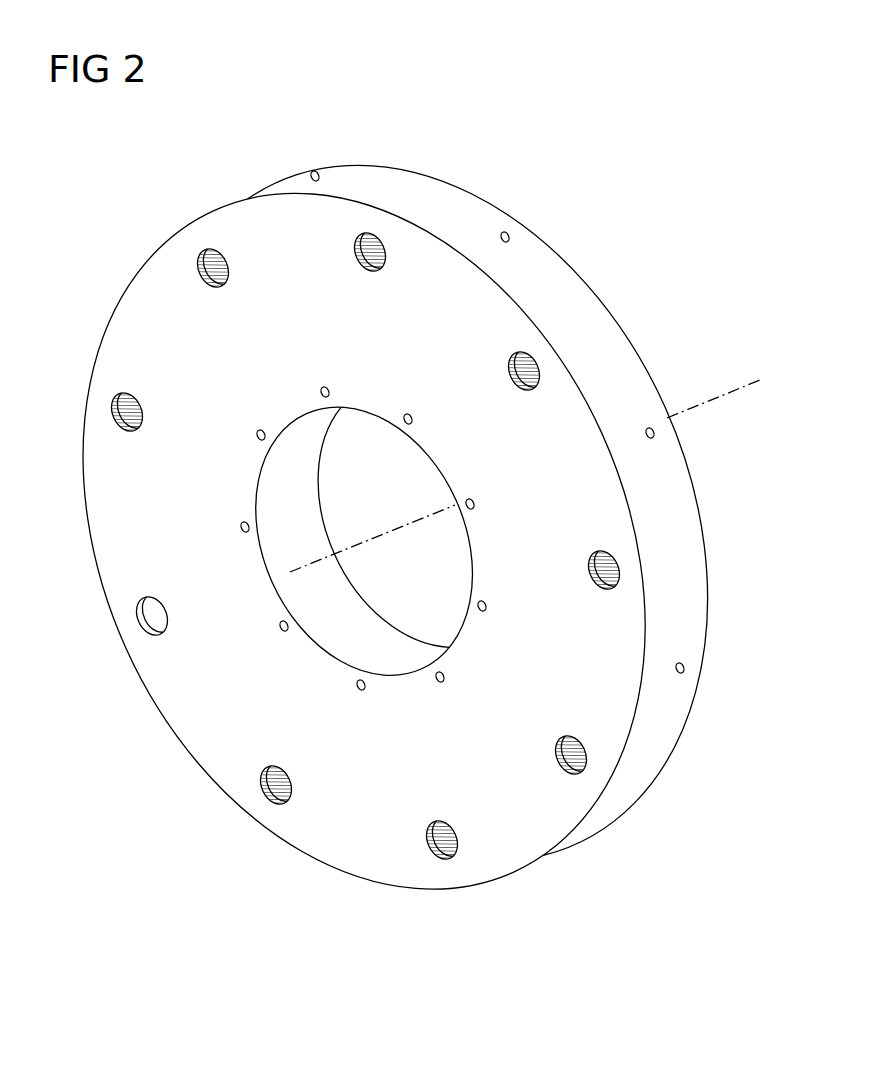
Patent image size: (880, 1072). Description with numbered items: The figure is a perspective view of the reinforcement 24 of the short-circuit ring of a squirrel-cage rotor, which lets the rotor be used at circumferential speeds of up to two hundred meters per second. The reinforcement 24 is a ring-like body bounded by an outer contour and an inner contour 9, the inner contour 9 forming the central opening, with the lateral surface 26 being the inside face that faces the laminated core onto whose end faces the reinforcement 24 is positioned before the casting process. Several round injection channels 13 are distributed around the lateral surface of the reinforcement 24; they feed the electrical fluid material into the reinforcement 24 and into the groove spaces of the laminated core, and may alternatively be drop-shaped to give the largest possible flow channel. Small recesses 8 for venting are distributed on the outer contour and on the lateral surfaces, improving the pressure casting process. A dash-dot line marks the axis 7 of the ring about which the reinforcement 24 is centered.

The axis of rotation 7 is at (713, 398).
The recesses 8 is at (240, 531).
The inner contour 9 is at (463, 613).
The injection channels 13 is at (195, 271).
The reinforcement 24 is at (376, 541).
The lateral surface 26 is at (210, 738).